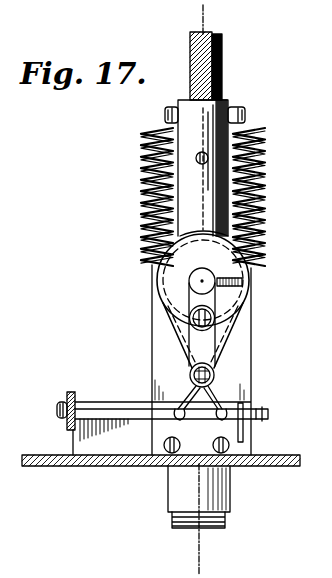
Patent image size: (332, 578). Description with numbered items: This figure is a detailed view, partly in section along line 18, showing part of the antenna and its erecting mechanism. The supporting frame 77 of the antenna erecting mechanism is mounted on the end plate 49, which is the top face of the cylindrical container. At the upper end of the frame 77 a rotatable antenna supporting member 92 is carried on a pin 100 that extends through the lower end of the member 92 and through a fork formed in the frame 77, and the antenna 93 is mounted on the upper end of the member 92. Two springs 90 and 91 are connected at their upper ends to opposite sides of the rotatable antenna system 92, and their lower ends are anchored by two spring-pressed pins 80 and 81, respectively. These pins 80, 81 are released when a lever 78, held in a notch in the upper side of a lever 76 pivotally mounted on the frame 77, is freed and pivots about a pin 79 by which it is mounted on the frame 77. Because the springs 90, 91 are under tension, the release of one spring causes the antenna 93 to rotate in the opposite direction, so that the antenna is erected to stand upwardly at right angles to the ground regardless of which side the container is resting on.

The section line 18- 18 is at (212, 21).
The top face 49 is at (270, 466).
The lever 76 is at (69, 392).
The supporting frame 77 is at (118, 448).
The lever 78 is at (80, 412).
The pin 79 is at (255, 404).
The spring-pressed pin 80 is at (228, 418).
The spring-pressed pin 81 is at (176, 412).
The spring 90 is at (148, 191).
The spring 91 is at (256, 221).
The rotatable antenna supporting member 92 is at (229, 100).
The antenna 93 is at (220, 60).
The pin 100 is at (190, 288).